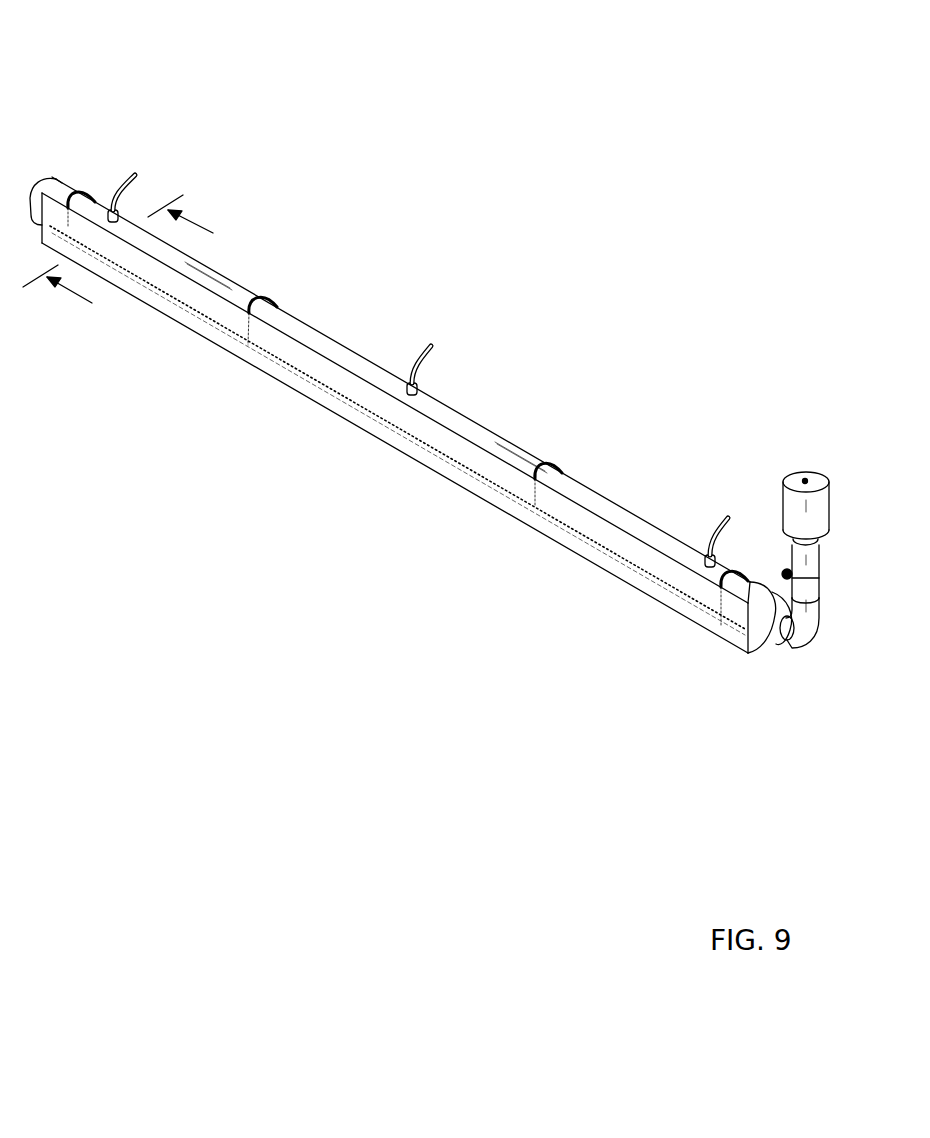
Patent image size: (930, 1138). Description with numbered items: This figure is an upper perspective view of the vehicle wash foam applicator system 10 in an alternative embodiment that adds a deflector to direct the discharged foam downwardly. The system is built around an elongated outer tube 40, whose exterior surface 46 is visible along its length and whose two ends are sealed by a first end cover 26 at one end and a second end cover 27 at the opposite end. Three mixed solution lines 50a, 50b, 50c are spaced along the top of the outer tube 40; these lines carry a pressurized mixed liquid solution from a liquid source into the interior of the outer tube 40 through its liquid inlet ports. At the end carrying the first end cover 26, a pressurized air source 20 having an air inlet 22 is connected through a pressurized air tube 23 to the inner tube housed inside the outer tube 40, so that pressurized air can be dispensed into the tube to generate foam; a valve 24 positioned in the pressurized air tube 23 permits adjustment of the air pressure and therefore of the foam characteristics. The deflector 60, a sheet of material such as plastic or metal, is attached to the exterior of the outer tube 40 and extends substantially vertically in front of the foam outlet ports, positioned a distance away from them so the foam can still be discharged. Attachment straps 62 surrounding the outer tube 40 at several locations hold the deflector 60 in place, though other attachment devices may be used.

The vehicle wash foam applicator system 10 is at (638, 42).
The pressurized air source 20 is at (783, 497).
The air inlet 22 is at (805, 478).
The pressurized air tube 23 is at (813, 567).
The valve 24 is at (784, 568).
The first end cover 26 is at (772, 637).
The second end cover 27 is at (52, 180).
The outer tube 40 is at (458, 413).
The exterior surface 46 is at (248, 298).
The mixed solution line 50a is at (120, 170).
The mixed solution line 50b is at (423, 345).
The mixed solution line 50c is at (717, 522).
The deflector 60 is at (412, 458).
The attachment straps 62 is at (97, 203).